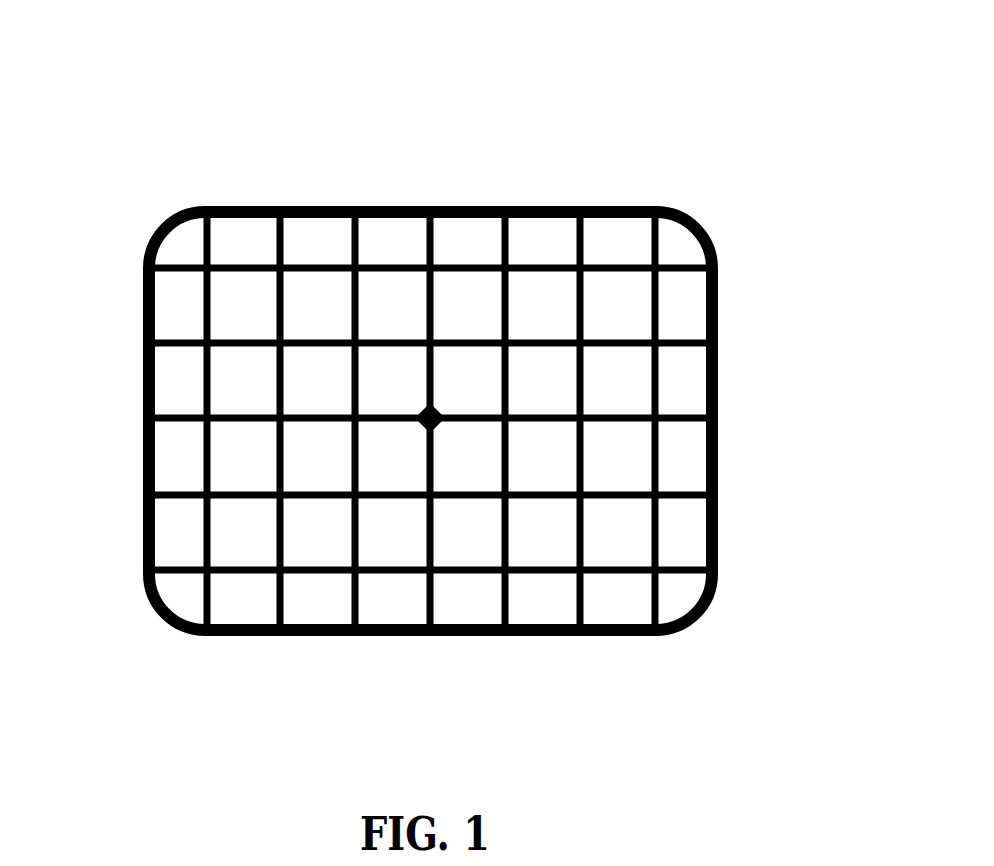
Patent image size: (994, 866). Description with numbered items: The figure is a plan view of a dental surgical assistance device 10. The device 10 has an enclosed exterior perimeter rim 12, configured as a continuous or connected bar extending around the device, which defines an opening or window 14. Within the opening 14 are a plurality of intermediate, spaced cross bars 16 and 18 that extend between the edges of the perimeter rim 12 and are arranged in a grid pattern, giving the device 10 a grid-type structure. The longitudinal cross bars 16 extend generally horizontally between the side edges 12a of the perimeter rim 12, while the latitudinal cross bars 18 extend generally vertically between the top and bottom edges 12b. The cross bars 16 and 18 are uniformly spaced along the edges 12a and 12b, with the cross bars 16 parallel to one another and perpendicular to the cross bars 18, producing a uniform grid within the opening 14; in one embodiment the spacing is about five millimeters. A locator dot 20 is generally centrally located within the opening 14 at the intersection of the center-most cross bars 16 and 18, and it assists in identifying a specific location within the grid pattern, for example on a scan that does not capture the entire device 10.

The device 10 is at (765, 85).
The exterior perimeter rim 12 is at (148, 240).
The side edges 12a is at (710, 398).
The top and bottom edges 12b is at (475, 212).
The opening 14 is at (618, 304).
The intermediate longitudinal cross bars 16 is at (685, 340).
The intermediate latitudinal cross bars 18 is at (280, 300).
The locator dot 20 is at (422, 430).